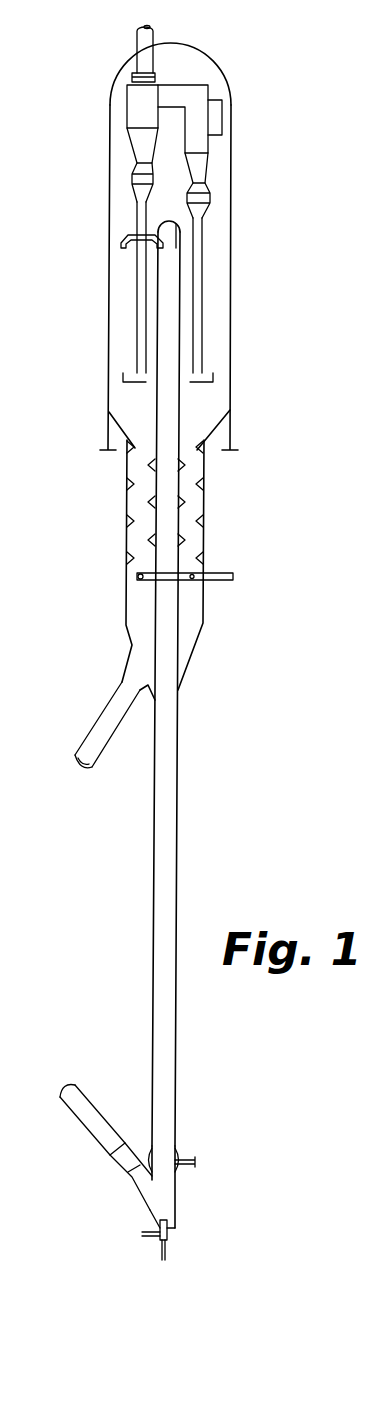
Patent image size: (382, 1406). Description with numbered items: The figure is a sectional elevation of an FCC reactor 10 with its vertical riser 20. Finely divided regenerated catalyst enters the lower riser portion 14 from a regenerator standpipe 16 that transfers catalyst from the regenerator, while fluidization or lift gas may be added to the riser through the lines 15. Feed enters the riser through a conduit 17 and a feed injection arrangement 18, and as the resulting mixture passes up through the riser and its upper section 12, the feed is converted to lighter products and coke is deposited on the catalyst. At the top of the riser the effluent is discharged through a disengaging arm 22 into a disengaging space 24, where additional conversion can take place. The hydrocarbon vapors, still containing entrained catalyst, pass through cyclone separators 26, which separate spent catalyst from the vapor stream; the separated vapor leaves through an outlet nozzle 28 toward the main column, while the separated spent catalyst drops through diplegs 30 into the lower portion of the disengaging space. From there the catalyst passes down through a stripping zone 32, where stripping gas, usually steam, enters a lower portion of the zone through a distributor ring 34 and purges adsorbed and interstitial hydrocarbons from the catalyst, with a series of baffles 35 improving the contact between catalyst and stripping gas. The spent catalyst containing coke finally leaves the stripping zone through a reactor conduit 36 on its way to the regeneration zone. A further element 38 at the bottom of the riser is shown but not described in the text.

The reactor 10 is at (243, 268).
The upper section 12 is at (180, 405).
The lower riser portion 14 is at (176, 1178).
The lines 15 is at (140, 1233).
The regenerator standpipe 16 is at (135, 1185).
The conduit 17 is at (196, 1150).
The feed injection arrangement 18 is at (163, 1152).
The vertical riser 20 is at (182, 1104).
The disengaging arm 22 is at (130, 229).
The disengaging space 24 is at (220, 216).
The cyclone separators 26 is at (214, 142).
The outlet nozzle 28 is at (153, 29).
The diplegs 30 is at (203, 293).
The stripping zone 32 is at (212, 531).
The distributor ring 34 is at (192, 580).
The baffles 35 is at (127, 518).
The reactor conduit 36 is at (112, 700).
The bottom nozzle 38 is at (170, 1236).